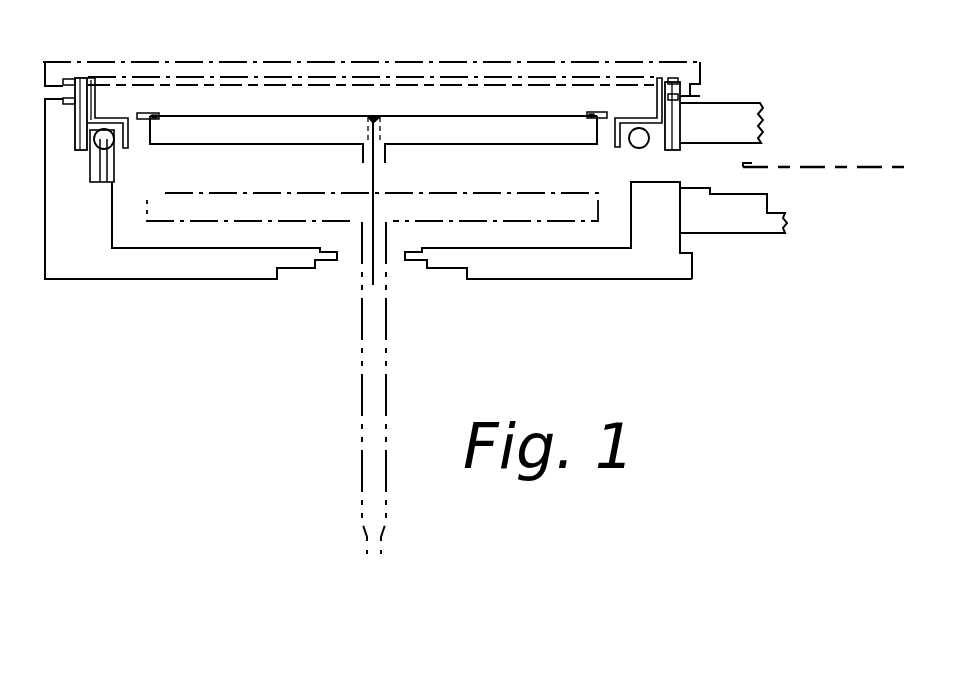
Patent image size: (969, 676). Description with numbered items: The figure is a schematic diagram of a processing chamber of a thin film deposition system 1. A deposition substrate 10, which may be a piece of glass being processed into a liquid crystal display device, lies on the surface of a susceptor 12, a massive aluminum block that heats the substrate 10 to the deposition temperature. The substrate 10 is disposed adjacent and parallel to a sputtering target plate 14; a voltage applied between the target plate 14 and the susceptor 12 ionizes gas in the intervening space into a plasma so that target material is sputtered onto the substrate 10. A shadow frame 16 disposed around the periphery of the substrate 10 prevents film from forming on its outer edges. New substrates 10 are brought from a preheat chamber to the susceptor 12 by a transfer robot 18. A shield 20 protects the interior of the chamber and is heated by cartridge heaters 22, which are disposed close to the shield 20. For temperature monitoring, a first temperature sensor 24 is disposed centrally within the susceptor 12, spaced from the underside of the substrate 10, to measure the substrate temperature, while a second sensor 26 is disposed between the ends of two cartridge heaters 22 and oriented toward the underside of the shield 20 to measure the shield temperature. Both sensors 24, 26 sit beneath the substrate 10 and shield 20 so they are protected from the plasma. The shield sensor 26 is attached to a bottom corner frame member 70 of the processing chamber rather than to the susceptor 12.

The system 1 is at (239, 428).
The deposition substrate 10 is at (447, 115).
The susceptor 12 is at (424, 132).
The sputtering target plate 14 is at (574, 60).
The shadow frame 16 is at (147, 112).
The transfer robot 18 is at (845, 165).
The shield 20 is at (104, 128).
The cartridge heaters 22 is at (634, 149).
The first temperature sensor 24 is at (365, 131).
The second sensor 26 is at (113, 162).
The bottom corner frame member 70 is at (77, 240).